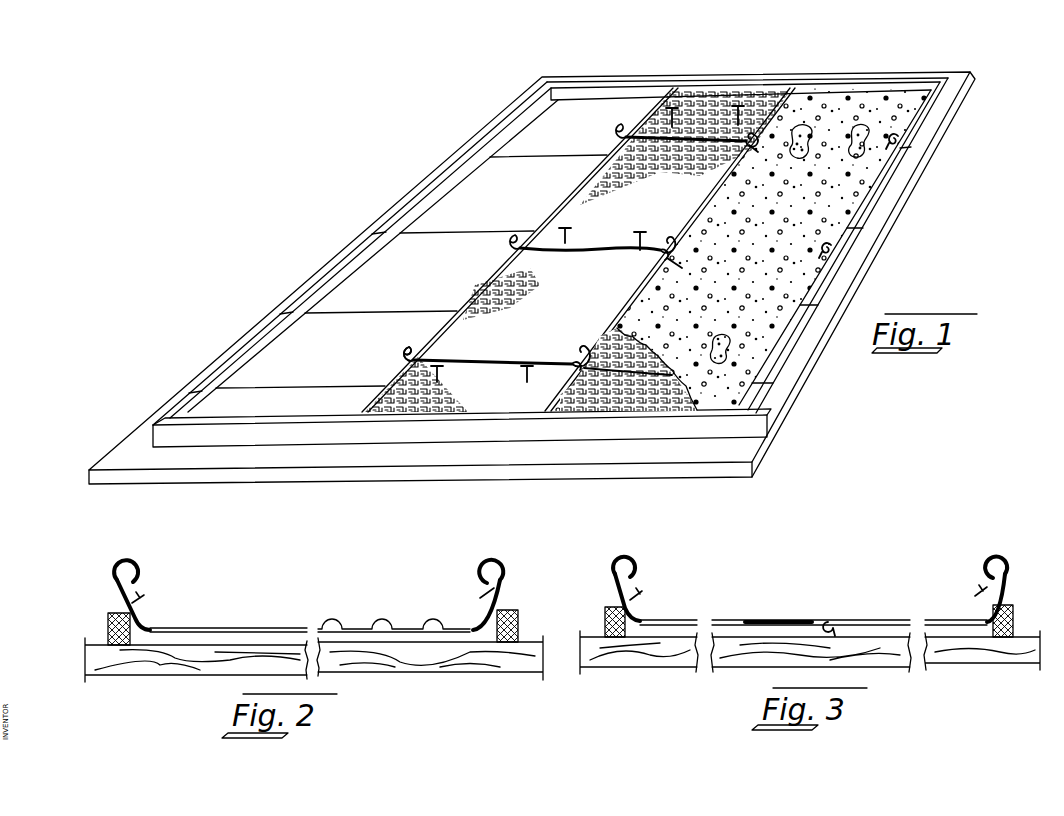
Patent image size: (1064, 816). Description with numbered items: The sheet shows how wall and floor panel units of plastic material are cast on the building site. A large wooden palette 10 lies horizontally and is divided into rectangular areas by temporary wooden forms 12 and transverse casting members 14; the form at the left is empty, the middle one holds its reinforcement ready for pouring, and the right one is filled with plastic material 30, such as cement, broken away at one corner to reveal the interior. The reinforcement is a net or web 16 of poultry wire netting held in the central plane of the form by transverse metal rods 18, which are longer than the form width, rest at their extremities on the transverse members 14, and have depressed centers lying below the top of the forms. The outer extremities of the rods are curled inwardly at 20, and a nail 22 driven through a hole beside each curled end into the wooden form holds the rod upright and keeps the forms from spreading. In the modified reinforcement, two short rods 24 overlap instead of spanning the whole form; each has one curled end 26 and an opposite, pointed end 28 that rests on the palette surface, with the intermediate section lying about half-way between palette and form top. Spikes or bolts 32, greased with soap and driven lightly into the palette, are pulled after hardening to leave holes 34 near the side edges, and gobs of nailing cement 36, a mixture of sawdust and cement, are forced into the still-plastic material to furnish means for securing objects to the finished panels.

In FIG. 1, the palette 10 is at (663, 468).
In FIG. 1, the temporary members or forms 12 is at (268, 437).
In FIG. 1, the transverse casting members 14 is at (398, 211).
In FIG. 1, the net or web 16 is at (647, 180).
In FIG. 1, the metal rods 18 is at (612, 254).
In FIG. 2, the metal rods 18 is at (278, 624).
In FIG. 1, the curled ends 20 is at (403, 347).
In FIG. 2, the curled ends 20 is at (145, 568).
In FIG. 2, the nail 22 is at (140, 603).
In FIG. 3, the nail 22 is at (980, 592).
In FIG. 3, the short rods 24 is at (727, 617).
In FIG. 3, the curled end 26 is at (641, 557).
In FIG. 3, the other end 28 is at (830, 620).
In FIG. 1, the plastic material 30 is at (812, 268).
In FIG. 1, the spikes or bolts 32 is at (570, 231).
In FIG. 1, the holes 34 is at (713, 374).
In FIG. 1, the nailing cement 36 is at (874, 130).